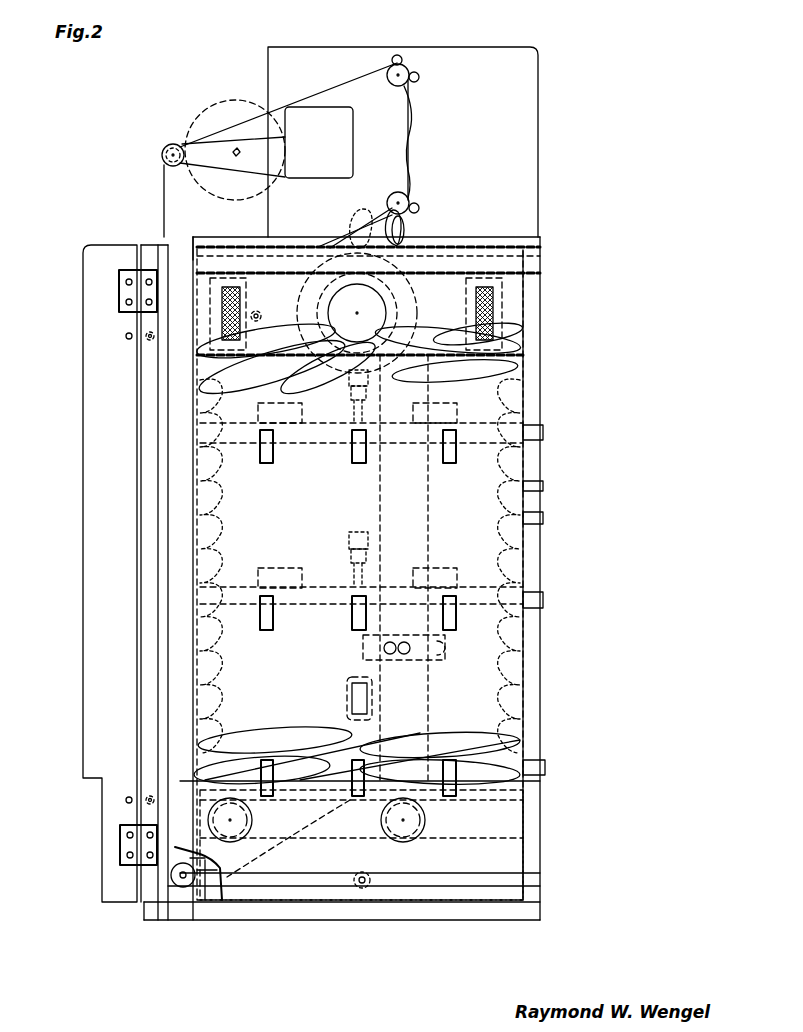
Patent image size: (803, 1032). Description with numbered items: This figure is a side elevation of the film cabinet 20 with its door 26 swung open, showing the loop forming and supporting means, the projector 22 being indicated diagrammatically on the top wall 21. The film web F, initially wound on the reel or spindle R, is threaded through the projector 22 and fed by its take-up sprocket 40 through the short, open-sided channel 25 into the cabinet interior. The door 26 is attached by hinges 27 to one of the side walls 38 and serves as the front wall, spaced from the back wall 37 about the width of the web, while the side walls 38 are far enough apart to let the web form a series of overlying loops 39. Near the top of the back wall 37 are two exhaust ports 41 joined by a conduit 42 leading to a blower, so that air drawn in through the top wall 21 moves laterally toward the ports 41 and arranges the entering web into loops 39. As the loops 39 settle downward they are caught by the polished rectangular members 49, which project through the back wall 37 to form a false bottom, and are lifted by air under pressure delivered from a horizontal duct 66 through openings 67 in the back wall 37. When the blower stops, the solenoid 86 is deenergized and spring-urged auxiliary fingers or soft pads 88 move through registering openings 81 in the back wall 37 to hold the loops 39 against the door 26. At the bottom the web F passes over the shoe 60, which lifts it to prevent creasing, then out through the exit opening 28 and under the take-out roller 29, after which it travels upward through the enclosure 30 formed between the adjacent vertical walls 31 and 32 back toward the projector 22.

The cabinet 20 is at (545, 460).
The top wall 21 is at (475, 233).
The projector 22 is at (412, 130).
The channel 25 is at (375, 222).
The door 26 is at (95, 400).
The hinges 27 is at (125, 290).
The exit opening 28 is at (205, 885).
The take-out roller 29 is at (175, 885).
The enclosure 30 is at (160, 447).
The vertical wall 31 is at (182, 270).
The vertical wall 32 is at (165, 260).
The back wall 37 is at (368, 573).
The side walls 38 is at (150, 637).
The loops 39 is at (425, 335).
The take-up sprocket 40 is at (395, 200).
The exhaust ports 41 is at (228, 305).
The conduit 42 is at (252, 355).
The rectangular members 49 is at (232, 775).
The shoe 60 is at (215, 880).
The horizontal duct 66 is at (350, 378).
The openings 67 is at (230, 820).
The openings 81 is at (272, 452).
The solenoid 86 is at (350, 552).
The soft pad 88 is at (266, 455).
The film web F is at (168, 192).
The film reel R is at (205, 118).